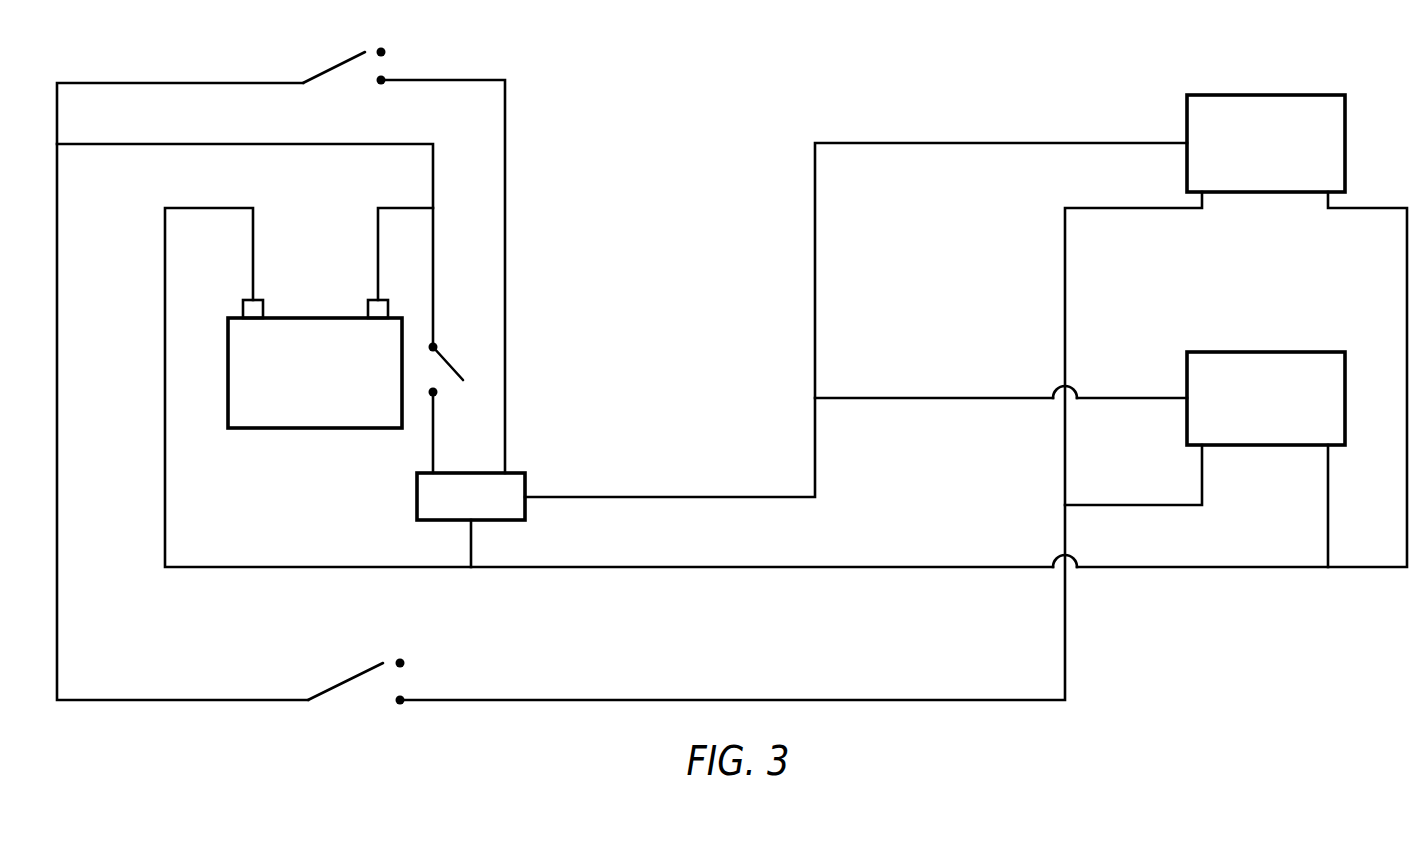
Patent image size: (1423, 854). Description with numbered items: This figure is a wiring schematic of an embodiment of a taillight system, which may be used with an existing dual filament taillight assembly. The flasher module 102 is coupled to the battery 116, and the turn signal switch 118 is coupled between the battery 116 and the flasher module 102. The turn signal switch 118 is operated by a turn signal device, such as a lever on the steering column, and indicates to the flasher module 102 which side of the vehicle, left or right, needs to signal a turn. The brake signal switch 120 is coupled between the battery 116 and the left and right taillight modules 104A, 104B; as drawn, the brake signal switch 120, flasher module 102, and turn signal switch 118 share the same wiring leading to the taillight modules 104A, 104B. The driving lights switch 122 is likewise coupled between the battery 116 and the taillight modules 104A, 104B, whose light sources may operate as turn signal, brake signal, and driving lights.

The flasher module 102 is at (450, 509).
The left taillight module 104A is at (1235, 411).
The right taillight module 104B is at (1237, 157).
The battery 116 is at (293, 386).
The turn signal switch 118 is at (452, 360).
The brake signal switch 120 is at (328, 72).
The driving lights switch 122 is at (342, 683).